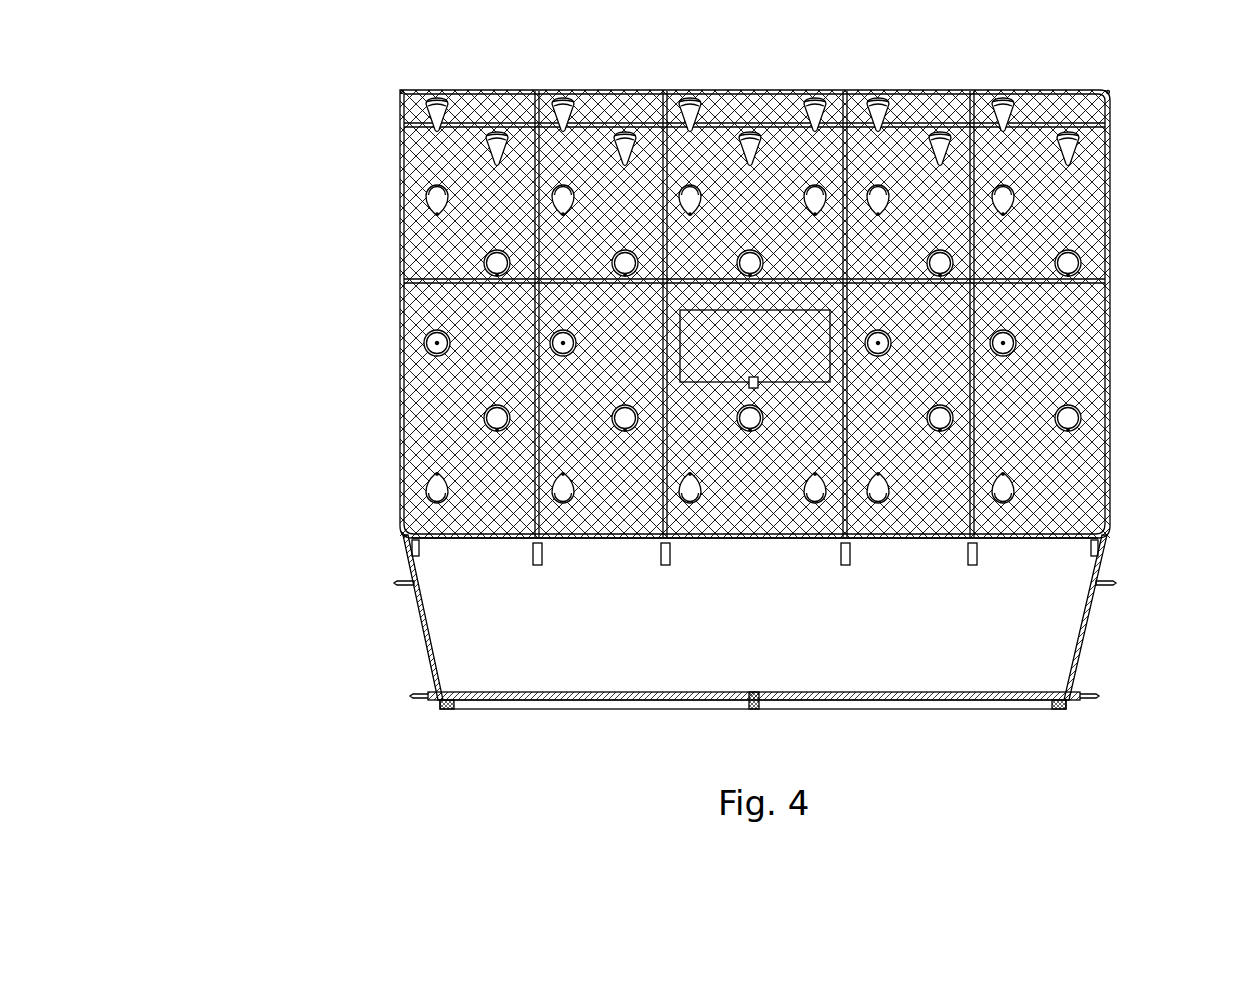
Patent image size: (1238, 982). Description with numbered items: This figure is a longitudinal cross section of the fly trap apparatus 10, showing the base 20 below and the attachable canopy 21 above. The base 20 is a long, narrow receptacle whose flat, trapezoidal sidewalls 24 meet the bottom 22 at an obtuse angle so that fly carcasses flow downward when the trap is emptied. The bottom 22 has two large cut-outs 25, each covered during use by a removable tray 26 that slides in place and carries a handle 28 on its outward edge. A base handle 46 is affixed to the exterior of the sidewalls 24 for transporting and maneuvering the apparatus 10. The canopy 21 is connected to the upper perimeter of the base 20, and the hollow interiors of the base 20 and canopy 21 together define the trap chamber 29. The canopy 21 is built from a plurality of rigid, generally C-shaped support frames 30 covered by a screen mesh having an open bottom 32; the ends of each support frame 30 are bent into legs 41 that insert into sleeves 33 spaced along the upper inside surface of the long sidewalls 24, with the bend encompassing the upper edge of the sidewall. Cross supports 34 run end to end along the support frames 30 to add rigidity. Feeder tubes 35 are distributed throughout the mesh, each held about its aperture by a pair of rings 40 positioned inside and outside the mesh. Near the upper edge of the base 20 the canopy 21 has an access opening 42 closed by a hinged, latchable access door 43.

The apparatus 10 is at (318, 714).
The base 20 is at (1140, 620).
The canopy 21 is at (1140, 203).
The bottom 22 is at (870, 710).
The sidewall 24 is at (1106, 560).
The cut-out 25 is at (625, 708).
The removable tray 26 is at (640, 692).
The handle 28 is at (410, 696).
The trap chamber 29 is at (700, 601).
The support frame 30 is at (1112, 92).
The open bottom 32 is at (626, 540).
The sleeve 33 is at (420, 552).
The cross support 34 is at (738, 122).
The feeder tube 35 is at (1082, 148).
The ring 40 is at (563, 97).
The leg 41 is at (535, 549).
The access opening 42 is at (757, 388).
The access door 43 is at (725, 370).
The base handle 46 is at (1116, 583).